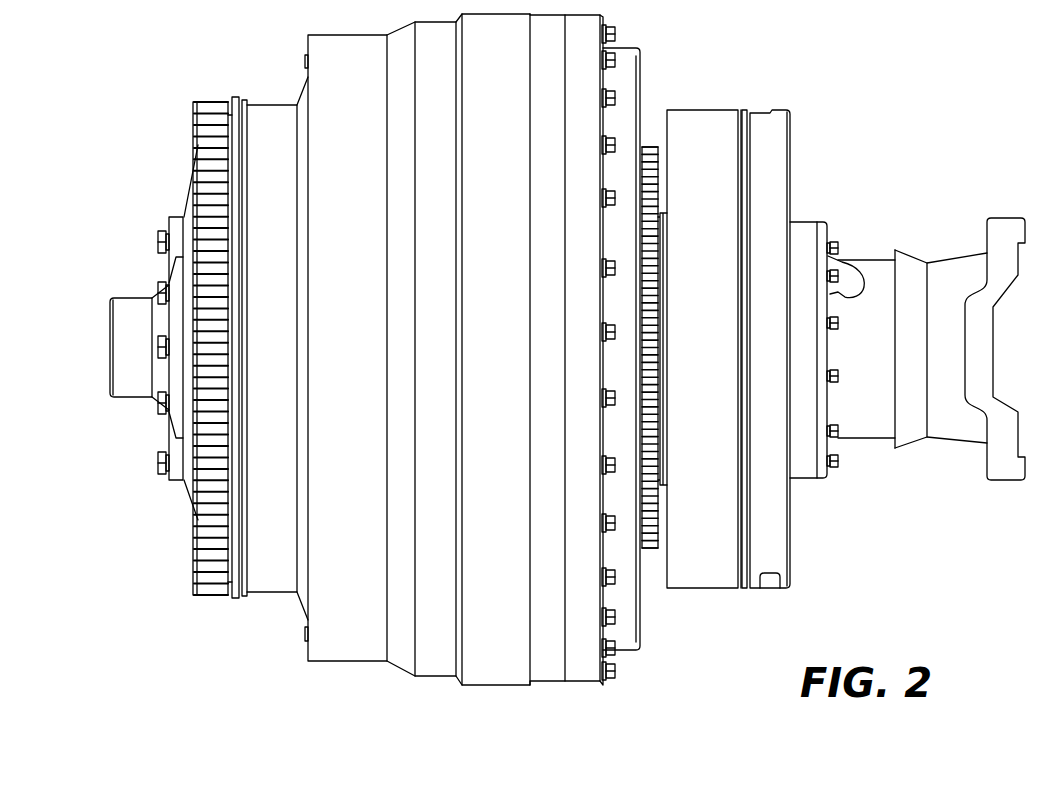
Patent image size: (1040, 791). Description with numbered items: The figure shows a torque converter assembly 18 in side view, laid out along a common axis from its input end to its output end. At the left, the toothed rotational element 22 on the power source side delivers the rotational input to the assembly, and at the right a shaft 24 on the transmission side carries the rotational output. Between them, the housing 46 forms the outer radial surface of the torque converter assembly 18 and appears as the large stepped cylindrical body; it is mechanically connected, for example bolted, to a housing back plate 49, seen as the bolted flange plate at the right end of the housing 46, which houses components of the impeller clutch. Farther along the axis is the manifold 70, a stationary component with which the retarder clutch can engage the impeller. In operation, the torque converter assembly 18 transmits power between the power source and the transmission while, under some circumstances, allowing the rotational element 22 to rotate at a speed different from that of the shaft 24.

The torque converter assembly 18 is at (760, 46).
The rotational element 22 is at (207, 101).
The shaft 24 is at (1010, 218).
The housing 46 is at (309, 34).
The housing back plate 49 is at (618, 45).
The manifold 70 is at (776, 110).